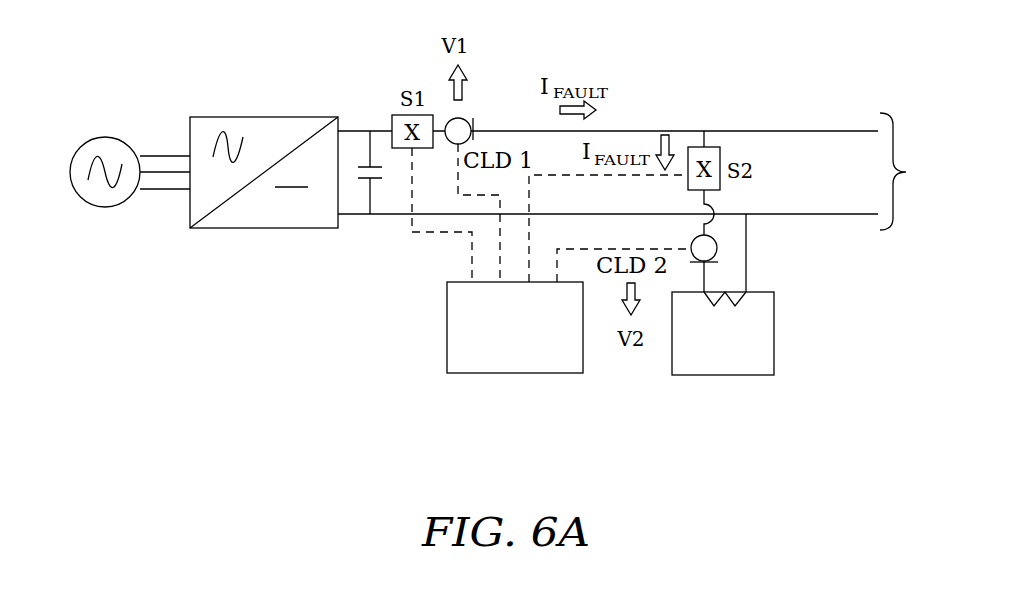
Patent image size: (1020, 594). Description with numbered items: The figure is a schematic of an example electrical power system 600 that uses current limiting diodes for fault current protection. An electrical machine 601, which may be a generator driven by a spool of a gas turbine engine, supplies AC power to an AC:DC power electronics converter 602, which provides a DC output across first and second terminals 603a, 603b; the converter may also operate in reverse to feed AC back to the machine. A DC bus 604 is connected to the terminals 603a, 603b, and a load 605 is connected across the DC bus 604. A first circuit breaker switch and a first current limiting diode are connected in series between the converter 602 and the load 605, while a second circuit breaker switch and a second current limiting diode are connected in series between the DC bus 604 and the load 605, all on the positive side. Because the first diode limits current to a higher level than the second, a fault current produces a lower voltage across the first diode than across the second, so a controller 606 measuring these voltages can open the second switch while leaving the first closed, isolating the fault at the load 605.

The electrical power system 600 is at (137, 38).
The electrical machine 601 is at (108, 137).
The AC:DC power electronics converter 602 is at (262, 228).
The first terminal 603a is at (338, 130).
The second terminal 603b is at (338, 228).
The DC bus 604 is at (876, 229).
The load 605 is at (672, 347).
The controller 606 is at (515, 327).